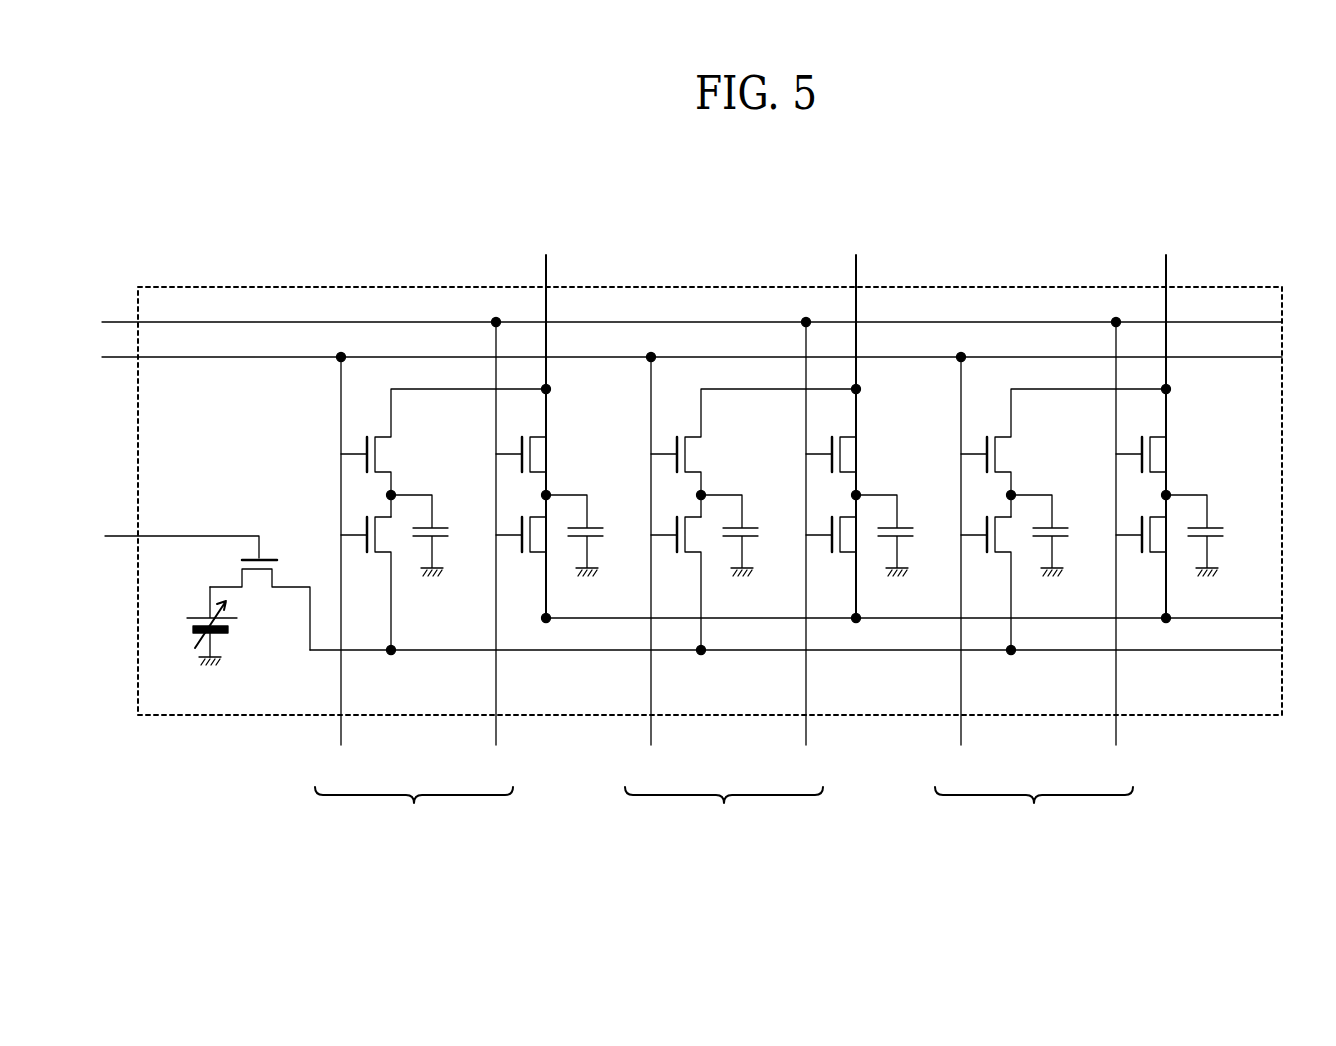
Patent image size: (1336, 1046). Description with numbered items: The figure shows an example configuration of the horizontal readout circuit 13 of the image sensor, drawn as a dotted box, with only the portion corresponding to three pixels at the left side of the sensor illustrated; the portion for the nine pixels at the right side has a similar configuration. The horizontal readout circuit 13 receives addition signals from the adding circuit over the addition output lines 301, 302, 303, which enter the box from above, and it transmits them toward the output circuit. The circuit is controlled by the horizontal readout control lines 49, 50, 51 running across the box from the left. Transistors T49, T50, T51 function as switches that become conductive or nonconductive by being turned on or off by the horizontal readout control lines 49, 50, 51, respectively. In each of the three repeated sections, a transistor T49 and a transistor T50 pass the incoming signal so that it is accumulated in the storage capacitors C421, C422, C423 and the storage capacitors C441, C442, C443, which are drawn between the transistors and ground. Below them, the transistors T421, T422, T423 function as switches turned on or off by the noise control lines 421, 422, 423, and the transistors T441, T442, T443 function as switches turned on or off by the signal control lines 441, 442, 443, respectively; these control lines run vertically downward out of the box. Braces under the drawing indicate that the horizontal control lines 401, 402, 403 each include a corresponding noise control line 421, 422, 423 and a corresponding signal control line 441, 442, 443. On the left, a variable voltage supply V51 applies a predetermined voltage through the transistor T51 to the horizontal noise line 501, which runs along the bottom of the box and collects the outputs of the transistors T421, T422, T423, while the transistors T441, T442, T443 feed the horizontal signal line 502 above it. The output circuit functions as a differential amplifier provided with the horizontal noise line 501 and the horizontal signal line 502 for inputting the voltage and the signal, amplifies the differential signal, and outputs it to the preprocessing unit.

The horizontal readout circuit 13 is at (138, 670).
The horizontal readout control line 50 is at (677, 322).
The horizontal readout control line 49 is at (677, 357).
The horizontal readout control line 51 is at (166, 540).
The variable voltage supply V51 is at (190, 622).
The transistor T51 is at (263, 572).
The horizontal noise line 501 is at (818, 650).
The horizontal signal line 502 is at (935, 618).
The addition output line 301 is at (546, 422).
The addition output line 302 is at (856, 422).
The addition output line 303 is at (1166, 422).
The transistor T49 is at (753, 453).
The transistor T50 is at (860, 474).
The transistor T421 is at (340, 563).
The transistor T441 is at (495, 547).
The transistor T422 is at (650, 563).
The transistor T442 is at (805, 547).
The transistor T423 is at (960, 563).
The transistor T443 is at (1115, 547).
The storage capacitor C421 is at (439, 550).
The storage capacitor C441 is at (594, 550).
The storage capacitor C422 is at (749, 550).
The storage capacitor C442 is at (904, 550).
The storage capacitor C423 is at (1059, 550).
The storage capacitor C443 is at (1214, 550).
The noise control line 421 is at (339, 570).
The signal control line 441 is at (494, 553).
The noise control line 422 is at (649, 570).
The signal control line 442 is at (804, 553).
The noise control line 423 is at (959, 570).
The signal control line 443 is at (1114, 553).
The horizontal control line 401 is at (414, 816).
The horizontal control line 402 is at (724, 816).
The horizontal control line 403 is at (1034, 816).